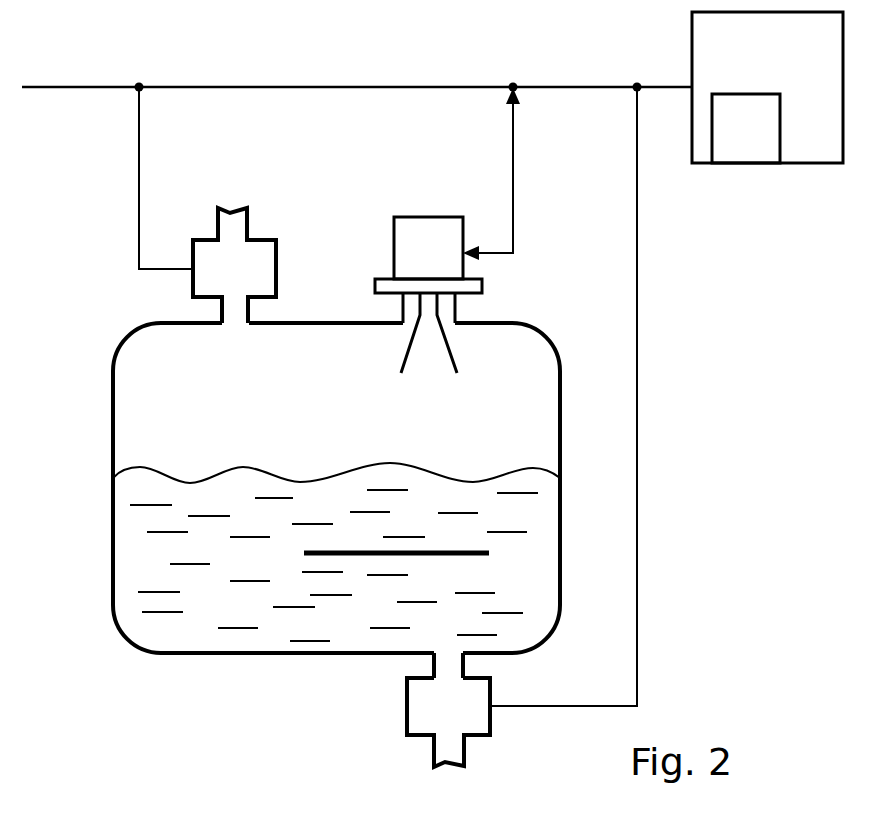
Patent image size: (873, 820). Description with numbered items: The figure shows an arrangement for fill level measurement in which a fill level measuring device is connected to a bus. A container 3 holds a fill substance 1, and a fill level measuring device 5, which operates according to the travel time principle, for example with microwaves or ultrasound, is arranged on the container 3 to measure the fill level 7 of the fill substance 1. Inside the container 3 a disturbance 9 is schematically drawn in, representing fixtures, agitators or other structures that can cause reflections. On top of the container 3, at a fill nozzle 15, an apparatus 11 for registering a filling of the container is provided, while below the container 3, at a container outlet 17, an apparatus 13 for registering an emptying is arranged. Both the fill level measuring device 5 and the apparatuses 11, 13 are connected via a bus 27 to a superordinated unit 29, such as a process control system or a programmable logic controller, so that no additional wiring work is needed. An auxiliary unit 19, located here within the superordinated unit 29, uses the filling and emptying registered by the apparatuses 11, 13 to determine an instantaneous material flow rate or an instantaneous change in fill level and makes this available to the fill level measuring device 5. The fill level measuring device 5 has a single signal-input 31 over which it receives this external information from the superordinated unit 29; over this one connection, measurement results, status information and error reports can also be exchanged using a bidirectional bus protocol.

The fill substance 1 is at (130, 548).
The container 3 is at (113, 393).
The fill level measuring device 5 is at (437, 257).
The fill level 7 is at (143, 470).
The disturbance 9 is at (462, 556).
The apparatus for registering a filling 11 is at (222, 281).
The apparatus for registering an emptying 13 is at (434, 706).
The fill nozzle 15 is at (228, 313).
The container outlet 17 is at (434, 666).
The auxiliary unit 19 is at (732, 142).
The bus 27 is at (320, 87).
The superordinated unit 29 is at (756, 74).
The signal-input 31 is at (470, 250).